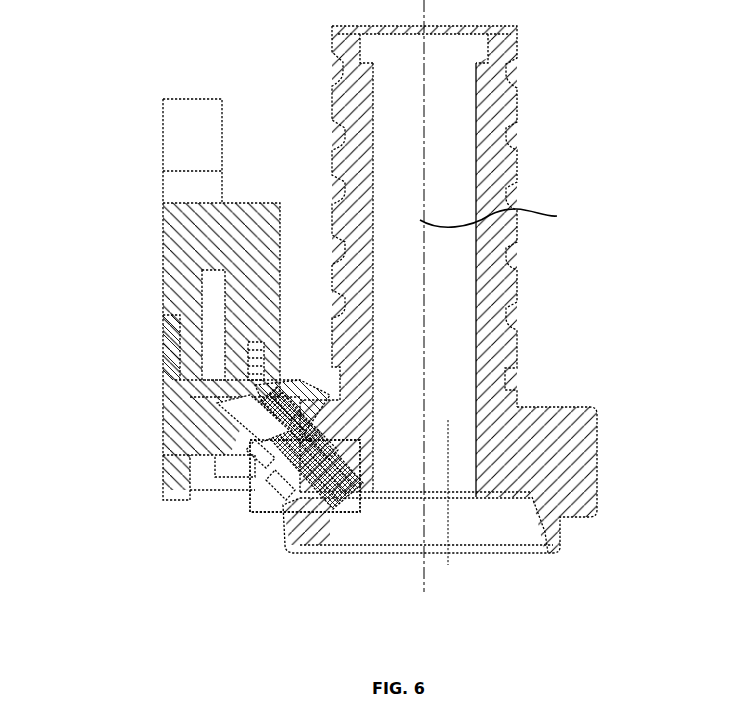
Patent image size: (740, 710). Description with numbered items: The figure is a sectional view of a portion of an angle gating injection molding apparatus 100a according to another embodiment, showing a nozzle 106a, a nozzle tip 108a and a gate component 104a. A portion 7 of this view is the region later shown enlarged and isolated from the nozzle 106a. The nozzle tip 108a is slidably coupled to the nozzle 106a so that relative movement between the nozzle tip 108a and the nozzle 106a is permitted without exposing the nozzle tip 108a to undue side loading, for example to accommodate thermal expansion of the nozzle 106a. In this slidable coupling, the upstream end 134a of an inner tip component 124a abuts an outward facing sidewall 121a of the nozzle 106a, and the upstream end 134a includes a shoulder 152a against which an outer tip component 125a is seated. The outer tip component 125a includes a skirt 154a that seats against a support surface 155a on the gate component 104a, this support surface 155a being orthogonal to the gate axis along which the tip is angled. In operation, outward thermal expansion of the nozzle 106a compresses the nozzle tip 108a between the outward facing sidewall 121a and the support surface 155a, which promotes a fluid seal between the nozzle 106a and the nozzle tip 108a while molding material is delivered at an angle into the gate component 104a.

The angle gating injection molding apparatus 100a is at (359, 329).
The gate component 104a is at (597, 438).
The nozzle 106a is at (258, 183).
The nozzle tip 108a is at (300, 493).
The outward facing sidewall 121a is at (296, 463).
The inner tip component 124a is at (310, 452).
The outer tip component 125a is at (285, 418).
The upstream end 134a is at (301, 400).
The shoulder 152a is at (308, 440).
The skirt 154a is at (262, 452).
The support surface 155a is at (288, 475).
The portion 7 is at (250, 513).